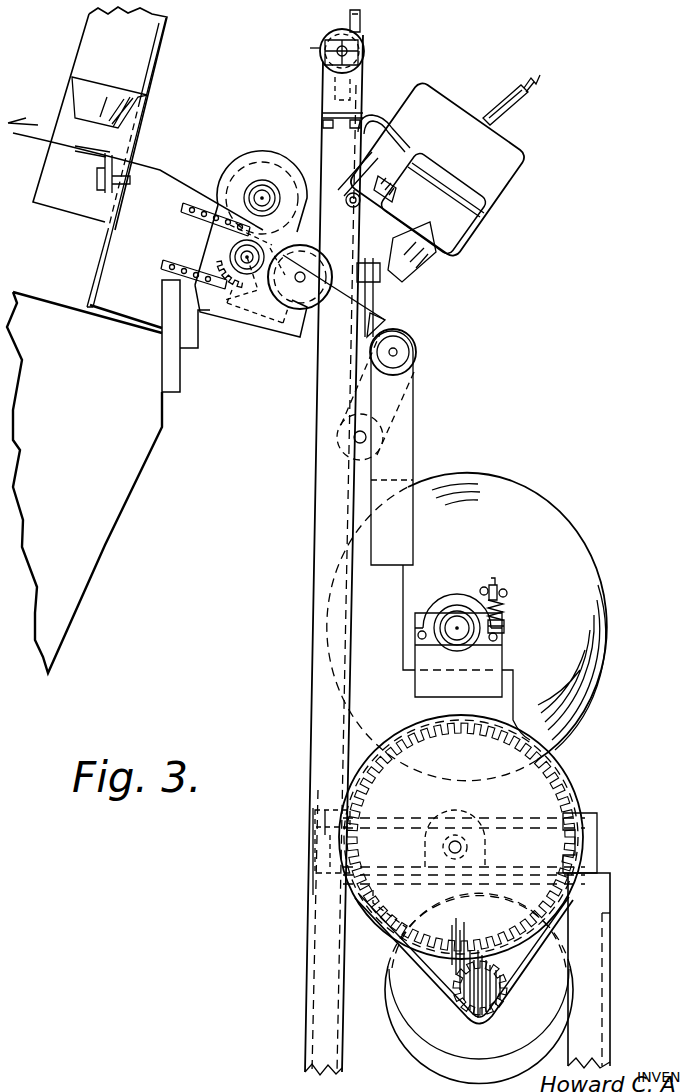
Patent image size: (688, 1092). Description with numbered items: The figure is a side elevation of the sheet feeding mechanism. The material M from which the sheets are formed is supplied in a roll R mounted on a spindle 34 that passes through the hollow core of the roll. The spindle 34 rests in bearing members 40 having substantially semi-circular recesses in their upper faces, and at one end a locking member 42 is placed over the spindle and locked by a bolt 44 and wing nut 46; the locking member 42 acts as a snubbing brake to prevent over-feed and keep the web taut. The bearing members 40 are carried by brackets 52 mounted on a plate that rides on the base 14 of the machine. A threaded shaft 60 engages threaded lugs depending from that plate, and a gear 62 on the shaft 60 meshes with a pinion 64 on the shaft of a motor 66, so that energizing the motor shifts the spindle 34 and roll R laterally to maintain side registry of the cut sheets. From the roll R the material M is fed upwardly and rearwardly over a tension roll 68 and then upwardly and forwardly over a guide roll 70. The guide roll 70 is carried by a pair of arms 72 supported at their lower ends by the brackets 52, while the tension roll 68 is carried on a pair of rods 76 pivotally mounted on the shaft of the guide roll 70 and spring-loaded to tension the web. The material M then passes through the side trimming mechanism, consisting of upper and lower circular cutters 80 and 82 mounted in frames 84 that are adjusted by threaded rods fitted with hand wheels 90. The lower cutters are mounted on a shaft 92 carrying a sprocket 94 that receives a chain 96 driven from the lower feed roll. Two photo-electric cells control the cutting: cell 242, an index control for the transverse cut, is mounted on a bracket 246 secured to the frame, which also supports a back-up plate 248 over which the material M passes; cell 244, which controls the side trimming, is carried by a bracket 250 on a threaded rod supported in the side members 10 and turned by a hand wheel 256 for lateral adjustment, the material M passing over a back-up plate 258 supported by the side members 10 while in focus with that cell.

The side members 10 is at (312, 717).
The base 14 is at (610, 963).
The spindle 34 is at (458, 622).
The bearing members 40 is at (493, 653).
The locking member 42 is at (457, 597).
The bolt 44 is at (504, 627).
The wing nut 46 is at (501, 594).
The brackets 52 is at (397, 583).
The threaded shaft 60 is at (470, 850).
The gear 62 is at (575, 786).
The pinion 64 is at (512, 997).
The motor 66 is at (433, 1045).
The tension roll 68 is at (336, 441).
The guide roll 70 is at (417, 347).
The arms 72 is at (407, 412).
The rods 76 is at (367, 380).
The upper circular cutter 80 is at (257, 163).
The lower circular cutter 82 is at (213, 240).
The frames 84 is at (257, 315).
The hand wheels 90 is at (295, 303).
The shaft 92 is at (245, 263).
The sprocket 94 is at (217, 255).
The chain 96 is at (200, 207).
The photo-electric cell 242 is at (88, 53).
The photo-electric cell 244 is at (470, 237).
The bracket 246 is at (100, 257).
The back-up plate 248 is at (88, 153).
The bracket 250 is at (372, 112).
The hand wheel 256 is at (322, 48).
The back-up plate 258 is at (386, 321).
The material M is at (427, 472).
The roll R is at (597, 572).